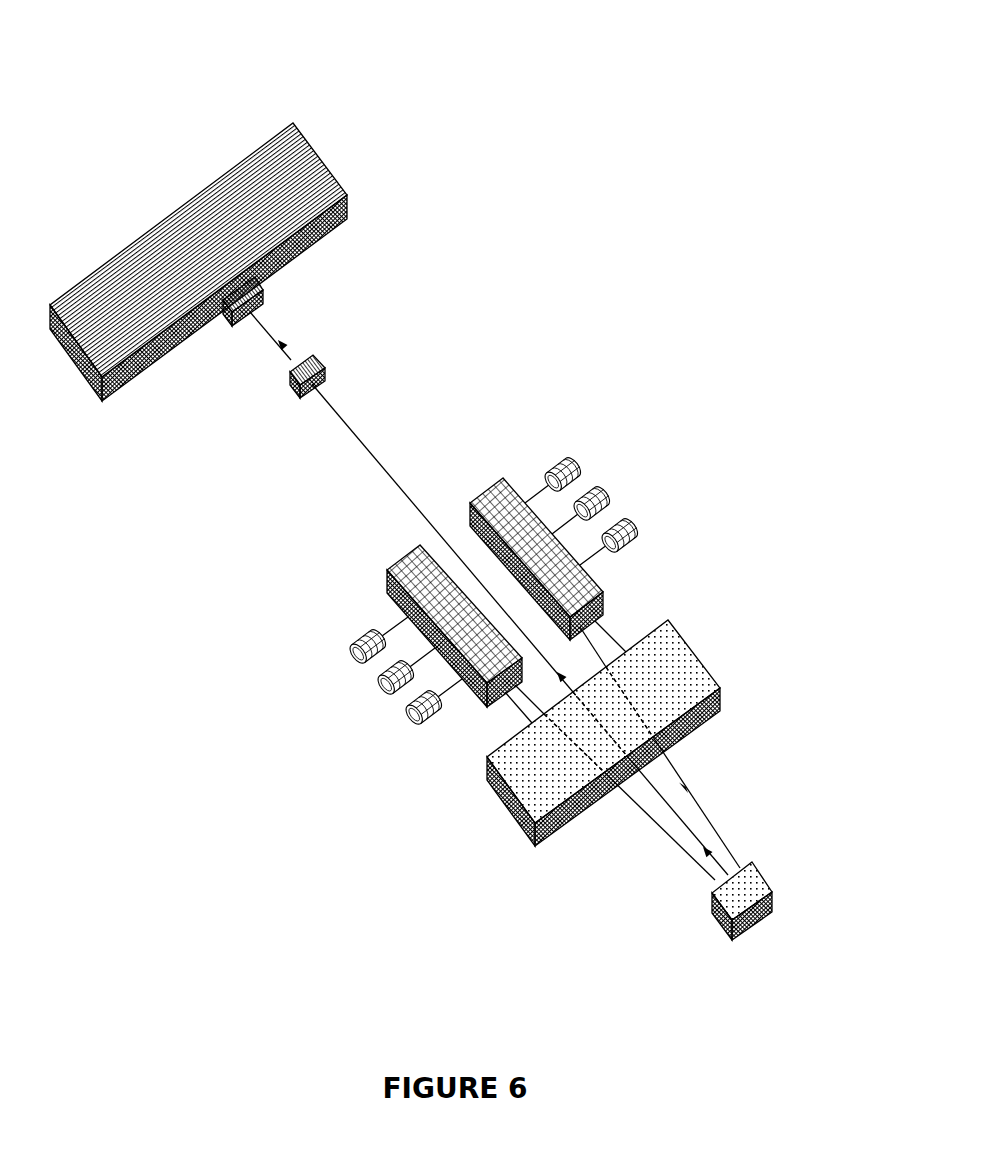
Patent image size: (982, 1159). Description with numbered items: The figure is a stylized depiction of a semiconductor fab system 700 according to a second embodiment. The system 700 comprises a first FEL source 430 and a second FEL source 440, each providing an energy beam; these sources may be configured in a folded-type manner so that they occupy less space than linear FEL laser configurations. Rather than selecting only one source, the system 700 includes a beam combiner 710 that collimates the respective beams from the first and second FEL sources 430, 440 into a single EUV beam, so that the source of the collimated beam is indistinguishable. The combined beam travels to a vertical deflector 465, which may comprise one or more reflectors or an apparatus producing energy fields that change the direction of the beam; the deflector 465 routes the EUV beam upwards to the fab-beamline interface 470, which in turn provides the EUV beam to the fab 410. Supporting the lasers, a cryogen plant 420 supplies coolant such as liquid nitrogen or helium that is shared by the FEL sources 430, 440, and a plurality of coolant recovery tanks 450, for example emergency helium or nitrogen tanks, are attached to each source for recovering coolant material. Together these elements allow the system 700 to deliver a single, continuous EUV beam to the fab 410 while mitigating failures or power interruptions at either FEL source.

The semiconductor fab system 700 is at (212, 48).
The fab 410 is at (297, 257).
The fab-beamline interface 470 is at (232, 325).
The vertical deflector 465 is at (300, 400).
The first FEL source 430 is at (502, 479).
The second FEL source 440 is at (392, 568).
The coolant recovery tanks 450 is at (577, 450).
The cryogen plant 420 is at (707, 672).
The beam combiner 710 is at (722, 930).